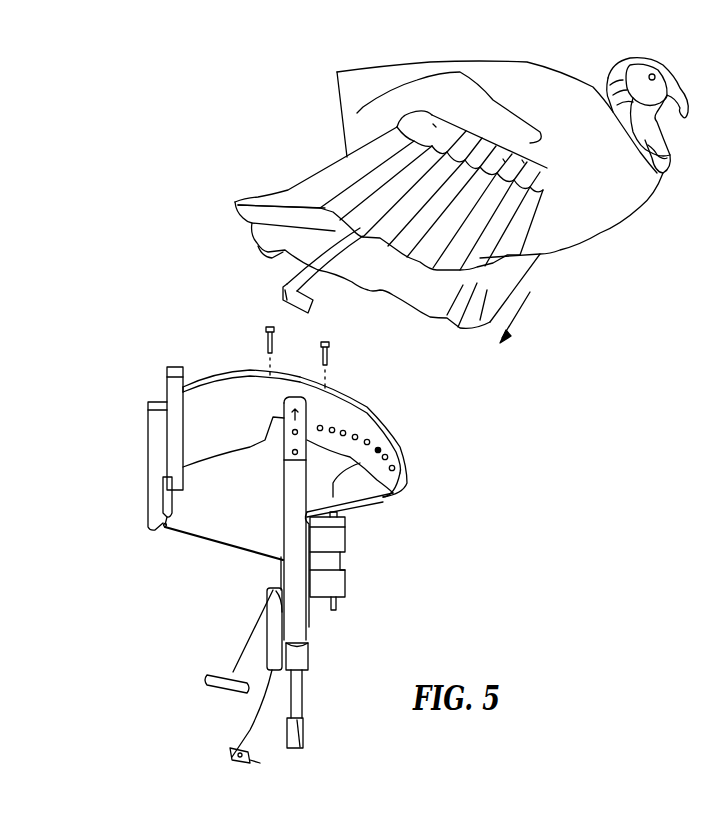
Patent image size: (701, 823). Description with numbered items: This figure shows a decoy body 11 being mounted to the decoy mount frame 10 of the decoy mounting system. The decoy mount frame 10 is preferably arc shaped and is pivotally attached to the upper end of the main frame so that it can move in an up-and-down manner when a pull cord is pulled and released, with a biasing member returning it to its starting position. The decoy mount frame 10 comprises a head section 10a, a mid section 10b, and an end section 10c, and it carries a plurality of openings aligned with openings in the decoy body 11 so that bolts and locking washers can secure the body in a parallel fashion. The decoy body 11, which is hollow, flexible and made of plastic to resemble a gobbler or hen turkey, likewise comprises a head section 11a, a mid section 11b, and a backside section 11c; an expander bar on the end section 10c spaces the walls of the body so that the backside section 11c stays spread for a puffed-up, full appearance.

The decoy mount frame 10 is at (377, 412).
The head section 10a is at (410, 472).
The mid section 10b is at (333, 387).
The end section 10c is at (220, 375).
The decoy body 11 is at (460, 62).
The head section 11a is at (630, 65).
The mid section 11b is at (517, 67).
The backside section 11c is at (362, 90).